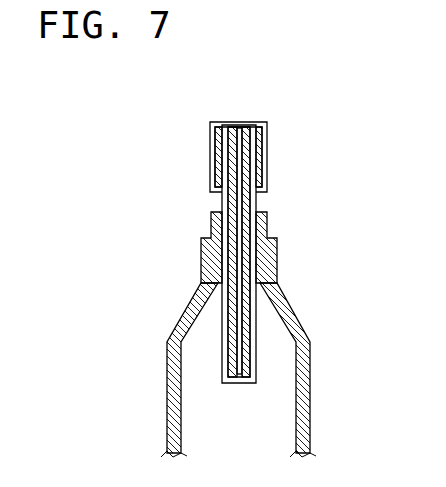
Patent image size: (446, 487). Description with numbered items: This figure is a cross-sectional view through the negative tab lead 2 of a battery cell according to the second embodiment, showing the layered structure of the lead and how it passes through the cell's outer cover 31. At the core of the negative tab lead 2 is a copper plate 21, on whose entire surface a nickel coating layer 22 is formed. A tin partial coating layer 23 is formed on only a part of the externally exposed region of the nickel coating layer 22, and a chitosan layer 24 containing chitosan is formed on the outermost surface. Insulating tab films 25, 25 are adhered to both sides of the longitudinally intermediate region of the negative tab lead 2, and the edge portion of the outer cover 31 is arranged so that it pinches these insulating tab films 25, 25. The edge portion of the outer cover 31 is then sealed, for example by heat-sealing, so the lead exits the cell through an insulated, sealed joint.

The negative tab lead 2 is at (212, 162).
The copper plate 21 is at (238, 122).
The nickel coating layer 22 is at (247, 326).
The tin partial coating layer 23 is at (212, 130).
The chitosan layer 24 is at (262, 176).
The insulating tab film 25 is at (212, 222).
The outer cover 31 is at (309, 383).